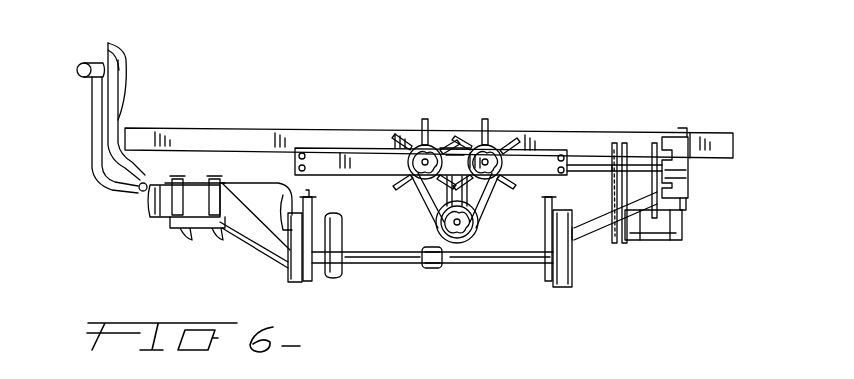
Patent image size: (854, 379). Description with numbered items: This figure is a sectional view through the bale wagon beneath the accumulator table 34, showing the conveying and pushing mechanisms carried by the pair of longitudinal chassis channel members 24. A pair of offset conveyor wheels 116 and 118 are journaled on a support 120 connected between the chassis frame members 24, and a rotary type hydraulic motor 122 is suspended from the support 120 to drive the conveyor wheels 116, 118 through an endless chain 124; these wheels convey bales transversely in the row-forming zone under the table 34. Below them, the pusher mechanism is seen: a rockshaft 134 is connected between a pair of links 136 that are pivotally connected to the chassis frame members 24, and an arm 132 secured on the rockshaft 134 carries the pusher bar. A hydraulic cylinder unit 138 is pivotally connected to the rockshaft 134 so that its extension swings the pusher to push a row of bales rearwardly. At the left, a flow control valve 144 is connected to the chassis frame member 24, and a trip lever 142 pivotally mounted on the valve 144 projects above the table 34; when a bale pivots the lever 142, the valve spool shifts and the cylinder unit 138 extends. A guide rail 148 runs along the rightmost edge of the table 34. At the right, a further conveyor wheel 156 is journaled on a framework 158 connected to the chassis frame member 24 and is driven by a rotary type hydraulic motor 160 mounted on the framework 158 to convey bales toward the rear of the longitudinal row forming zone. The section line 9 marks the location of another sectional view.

The accumulator table 34 is at (245, 128).
The support 120 is at (350, 162).
The guide rail 148 is at (92, 137).
The trip lever 142 is at (128, 72).
The flow control valve 144 is at (160, 213).
The longitudinal channel member 24 is at (300, 284).
The link 136 is at (318, 208).
The arm 132 is at (343, 236).
The rockshaft 134 is at (373, 265).
The hydraulic cylinder unit 138 is at (425, 268).
The section line 9- 9 is at (440, 240).
The conveyor wheel 118 is at (432, 146).
The conveyor wheel 116 is at (500, 145).
The endless chain 124 is at (483, 205).
The rotary type hydraulic motor 122 is at (476, 233).
The framework 158 is at (598, 228).
The conveyor wheel 156 is at (690, 190).
The rotary type hydraulic motor 160 is at (684, 230).